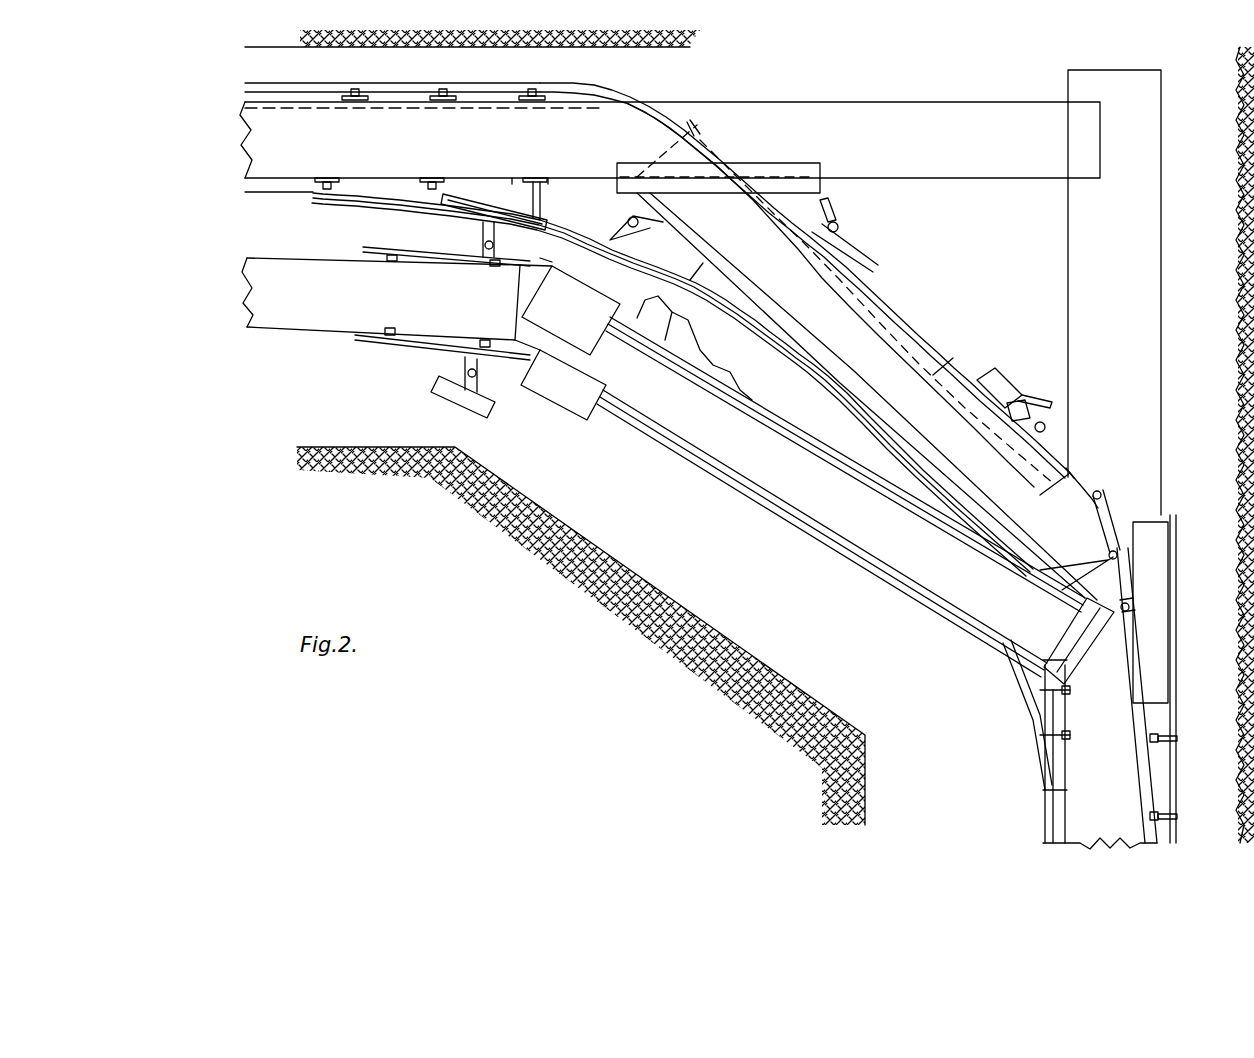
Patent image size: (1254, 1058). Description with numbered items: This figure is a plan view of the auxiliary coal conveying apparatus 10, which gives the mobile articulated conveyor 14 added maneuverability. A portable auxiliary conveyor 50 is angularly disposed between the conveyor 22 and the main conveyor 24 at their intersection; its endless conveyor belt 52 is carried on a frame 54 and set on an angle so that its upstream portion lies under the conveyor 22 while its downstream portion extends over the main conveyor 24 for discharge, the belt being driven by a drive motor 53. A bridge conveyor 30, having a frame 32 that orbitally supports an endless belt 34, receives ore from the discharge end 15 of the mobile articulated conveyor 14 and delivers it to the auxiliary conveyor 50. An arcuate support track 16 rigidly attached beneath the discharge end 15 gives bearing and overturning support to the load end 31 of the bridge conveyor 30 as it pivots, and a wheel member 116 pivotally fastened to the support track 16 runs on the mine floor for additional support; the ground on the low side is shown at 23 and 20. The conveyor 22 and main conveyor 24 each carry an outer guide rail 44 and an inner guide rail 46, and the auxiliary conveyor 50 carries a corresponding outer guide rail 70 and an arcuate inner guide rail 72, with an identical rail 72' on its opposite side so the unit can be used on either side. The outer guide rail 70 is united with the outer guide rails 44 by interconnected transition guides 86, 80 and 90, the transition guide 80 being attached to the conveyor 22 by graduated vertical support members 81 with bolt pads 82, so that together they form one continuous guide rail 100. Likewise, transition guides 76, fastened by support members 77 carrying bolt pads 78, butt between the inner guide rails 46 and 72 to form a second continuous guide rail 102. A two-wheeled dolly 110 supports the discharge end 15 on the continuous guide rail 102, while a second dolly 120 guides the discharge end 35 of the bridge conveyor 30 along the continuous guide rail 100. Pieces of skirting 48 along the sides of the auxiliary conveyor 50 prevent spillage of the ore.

The auxiliary conveying apparatus 10 is at (912, 636).
The mobile articulated conveyor 14 is at (265, 330).
The discharge end 15 is at (422, 313).
The support track 16 is at (520, 363).
The lower ground region 20 is at (930, 797).
The conveyor 22 is at (1050, 153).
The ground slope 23 is at (372, 427).
The main conveyor 24 is at (1126, 235).
The bridge conveyor 30 is at (670, 455).
The load end 31 is at (522, 256).
The frame 32 is at (827, 540).
The endless belt 34 is at (748, 441).
The discharge end 35 is at (1054, 618).
The outer guide rail 44 is at (265, 86).
The inner guide rail 46 is at (265, 196).
The skirting 48 is at (815, 170).
The auxiliary conveyor 50 is at (870, 350).
The endless conveyor belt 52 is at (840, 331).
The drive motor 53 is at (1000, 390).
The frame 54 is at (843, 252).
The outer guide rail 70 is at (745, 163).
The inner guide rail 72 is at (669, 389).
The inner guide rail 72' is at (752, 214).
The transition guide 76 is at (358, 200).
The support member 77 is at (548, 195).
The bolt pad 78 is at (520, 180).
The transition guide 80 is at (490, 82).
The vertical support member 81 is at (435, 93).
The bolt pad 82 is at (355, 104).
The transition guide 86 is at (625, 96).
The transition guide 90 is at (1140, 652).
The continuous guide rail 100 is at (860, 282).
The continuous guide rail 102 is at (1030, 738).
The dolly 110 is at (455, 212).
The wheel member 116 is at (480, 405).
The dolly 120 is at (1122, 505).